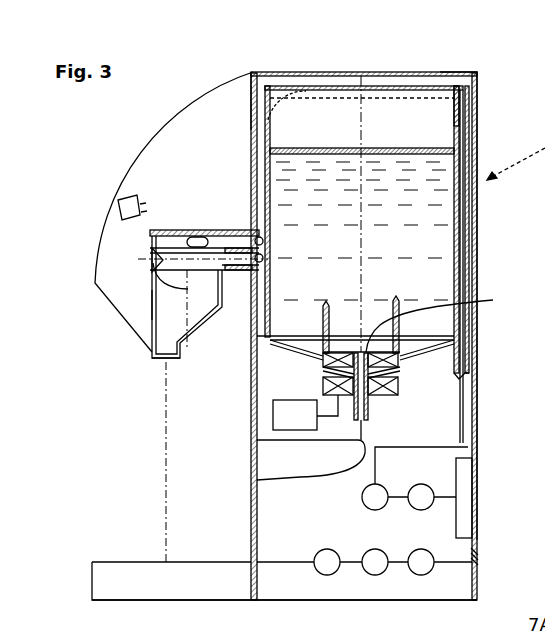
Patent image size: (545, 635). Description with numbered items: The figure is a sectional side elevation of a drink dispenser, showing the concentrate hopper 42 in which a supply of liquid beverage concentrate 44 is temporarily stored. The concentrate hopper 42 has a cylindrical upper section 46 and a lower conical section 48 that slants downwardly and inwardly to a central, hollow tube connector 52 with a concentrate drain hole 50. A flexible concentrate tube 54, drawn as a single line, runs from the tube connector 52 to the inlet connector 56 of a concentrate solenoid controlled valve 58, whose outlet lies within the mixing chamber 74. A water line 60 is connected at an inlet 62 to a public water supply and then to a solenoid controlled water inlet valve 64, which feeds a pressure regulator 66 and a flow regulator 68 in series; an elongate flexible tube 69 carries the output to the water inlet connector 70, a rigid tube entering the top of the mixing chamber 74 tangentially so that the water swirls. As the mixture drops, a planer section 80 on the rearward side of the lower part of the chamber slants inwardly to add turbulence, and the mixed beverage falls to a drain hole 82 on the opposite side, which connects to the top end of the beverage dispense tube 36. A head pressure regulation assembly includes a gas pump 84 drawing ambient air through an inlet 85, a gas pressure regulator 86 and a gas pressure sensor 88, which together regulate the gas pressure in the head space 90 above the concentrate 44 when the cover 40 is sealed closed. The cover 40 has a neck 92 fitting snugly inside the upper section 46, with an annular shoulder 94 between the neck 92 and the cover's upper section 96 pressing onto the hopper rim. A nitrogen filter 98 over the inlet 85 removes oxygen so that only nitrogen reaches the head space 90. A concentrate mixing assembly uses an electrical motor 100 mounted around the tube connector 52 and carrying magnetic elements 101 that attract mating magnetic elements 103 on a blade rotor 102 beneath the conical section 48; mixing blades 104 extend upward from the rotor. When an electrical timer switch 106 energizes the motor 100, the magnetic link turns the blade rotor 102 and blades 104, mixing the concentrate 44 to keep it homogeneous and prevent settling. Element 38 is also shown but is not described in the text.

The beverage dispense tube 36 is at (151, 347).
The sensor 38 is at (120, 210).
The cover 40 is at (428, 84).
The concentrate hopper 42 is at (270, 130).
The liquid beverage concentrate 44 is at (424, 150).
The cylindrical upper section 46 is at (264, 160).
The lower conical section 48 is at (400, 351).
The concentrate drain hole 50 is at (241, 485).
The tube connector 52 is at (370, 412).
The flexible concentrate tube 54 is at (283, 441).
The inlet connector 56 is at (460, 250).
The concentrate solenoid controlled valve 58 is at (150, 280).
The water line 60 is at (449, 568).
The inlet 62 is at (479, 556).
The solenoid controlled water inlet valve 64 is at (432, 576).
The pressure regulator 66 is at (386, 576).
The flow regulator 68 is at (332, 576).
The elongate flexible tube 69 is at (282, 564).
The water inlet connector 70 is at (140, 163).
The mixing chamber 74 is at (150, 299).
The planer section 80 is at (197, 355).
The drain hole 82 is at (150, 361).
The gas pump 84 is at (424, 482).
The ambient air inlet 85 is at (478, 220).
The gas pressure regulator 86 is at (433, 443).
The gas pressure sensor 88 is at (306, 91).
The head space 90 is at (463, 107).
The neck 92 is at (282, 87).
The annular shoulder 94 is at (250, 88).
The upper section 96 is at (478, 80).
The nitrogen filter 98 is at (468, 525).
The electrical motor 100 is at (369, 403).
The magnetic elements 101 is at (400, 384).
The blade rotor 102 is at (454, 337).
The magnetic elements 103 is at (322, 388).
The mixing blades 104 is at (322, 353).
The electrical timer switch 106 is at (273, 415).